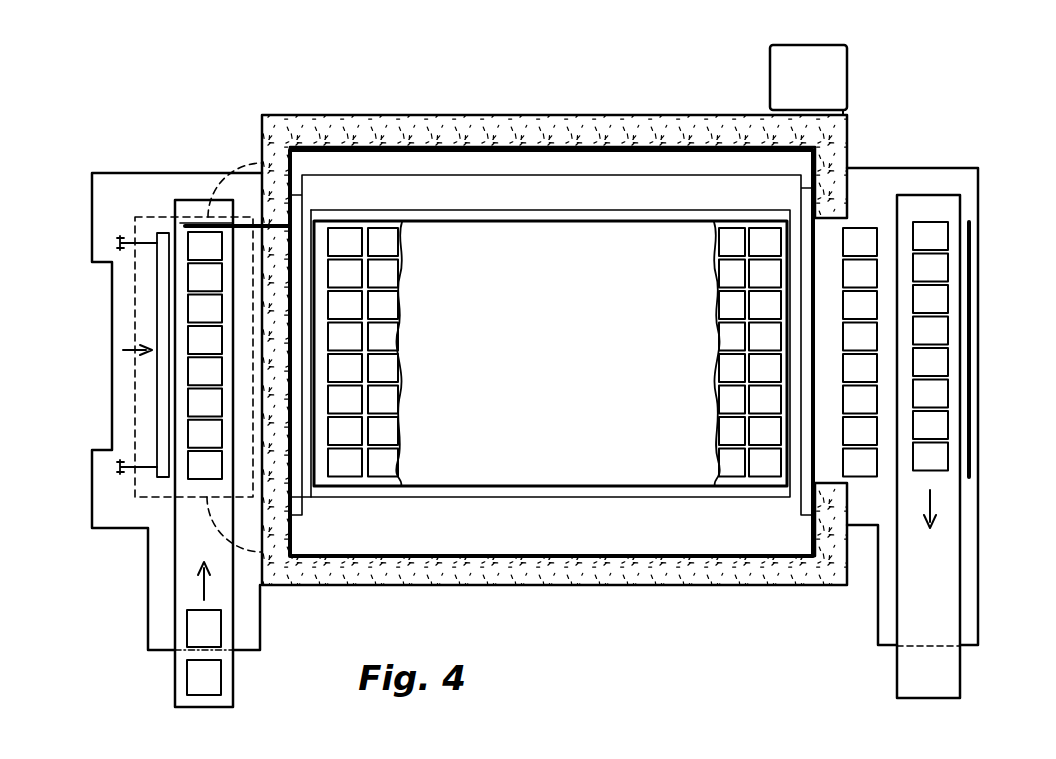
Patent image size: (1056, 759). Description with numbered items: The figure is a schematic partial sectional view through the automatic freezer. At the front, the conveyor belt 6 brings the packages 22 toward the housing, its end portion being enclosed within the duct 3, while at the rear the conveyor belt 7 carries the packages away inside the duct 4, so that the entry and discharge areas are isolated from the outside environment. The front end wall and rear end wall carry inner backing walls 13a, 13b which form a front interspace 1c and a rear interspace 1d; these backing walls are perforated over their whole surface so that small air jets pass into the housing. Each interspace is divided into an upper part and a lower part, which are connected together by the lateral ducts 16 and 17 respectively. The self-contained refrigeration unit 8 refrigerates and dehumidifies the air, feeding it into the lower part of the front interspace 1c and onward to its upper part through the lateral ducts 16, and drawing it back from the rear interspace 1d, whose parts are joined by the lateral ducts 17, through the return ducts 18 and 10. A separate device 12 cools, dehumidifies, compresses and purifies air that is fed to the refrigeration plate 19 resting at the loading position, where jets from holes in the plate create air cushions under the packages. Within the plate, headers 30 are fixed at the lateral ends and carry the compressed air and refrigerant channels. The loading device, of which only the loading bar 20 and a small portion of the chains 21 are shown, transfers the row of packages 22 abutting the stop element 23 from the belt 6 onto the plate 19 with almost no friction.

The front interspace 1c is at (297, 393).
The rear interspace 1d is at (797, 398).
The duct 3 is at (158, 632).
The duct 4 is at (967, 582).
The conveyor belt 6 is at (232, 680).
The conveyor belt 7 is at (910, 665).
The self-contained refrigeration unit 8 is at (118, 183).
The ducting 10 is at (262, 153).
The device 12 is at (830, 83).
The inner backing wall 13a is at (303, 313).
The inner backing wall 13b is at (800, 368).
The lateral duct 16 is at (305, 198).
The lateral duct 17 is at (810, 200).
The duct 18 is at (588, 163).
The refrigeration plate 19 is at (625, 467).
The loading bar 20 is at (162, 417).
The chains 21 is at (122, 252).
The packages 22 is at (377, 278).
The stop element 23 is at (198, 223).
The header 30 is at (468, 217).